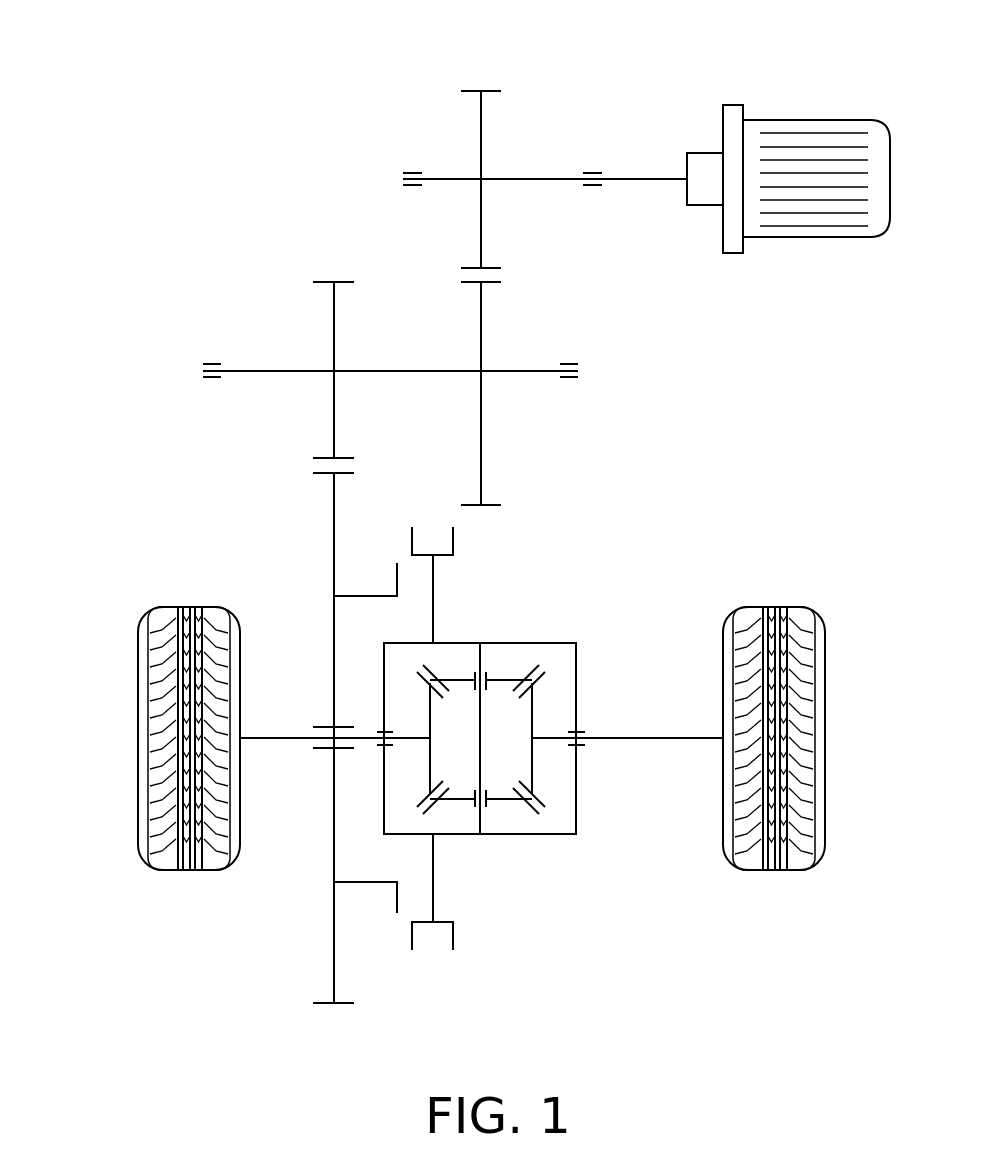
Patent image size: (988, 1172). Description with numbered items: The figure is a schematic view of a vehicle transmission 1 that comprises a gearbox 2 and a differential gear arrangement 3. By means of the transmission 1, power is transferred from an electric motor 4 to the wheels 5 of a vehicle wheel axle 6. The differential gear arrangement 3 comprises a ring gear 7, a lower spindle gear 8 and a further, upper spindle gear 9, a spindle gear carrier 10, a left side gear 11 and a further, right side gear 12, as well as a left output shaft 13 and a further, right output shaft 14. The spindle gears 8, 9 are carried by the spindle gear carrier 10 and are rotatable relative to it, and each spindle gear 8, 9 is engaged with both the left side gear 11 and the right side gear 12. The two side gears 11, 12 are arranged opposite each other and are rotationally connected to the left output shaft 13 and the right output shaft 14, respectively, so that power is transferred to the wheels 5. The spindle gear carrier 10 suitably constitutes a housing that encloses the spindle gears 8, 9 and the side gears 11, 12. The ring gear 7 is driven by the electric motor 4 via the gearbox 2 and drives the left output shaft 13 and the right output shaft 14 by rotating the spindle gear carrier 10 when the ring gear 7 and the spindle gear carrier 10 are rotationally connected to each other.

The vehicle transmission 1 is at (205, 77).
The gearbox 2 is at (267, 303).
The differential gear arrangement 3 is at (591, 865).
The electric motor 4 is at (810, 120).
The wheels 5 is at (132, 738).
The vehicle wheel axle 6 is at (628, 701).
The ring gear 7 is at (328, 618).
The spindle gear 8 is at (517, 800).
The further spindle gear 9 is at (510, 680).
The spindle gear carrier 10 is at (563, 643).
The side gear 11 is at (430, 767).
The further side gear 12 is at (532, 767).
The output shaft 13 is at (287, 735).
The further output shaft 14 is at (670, 738).